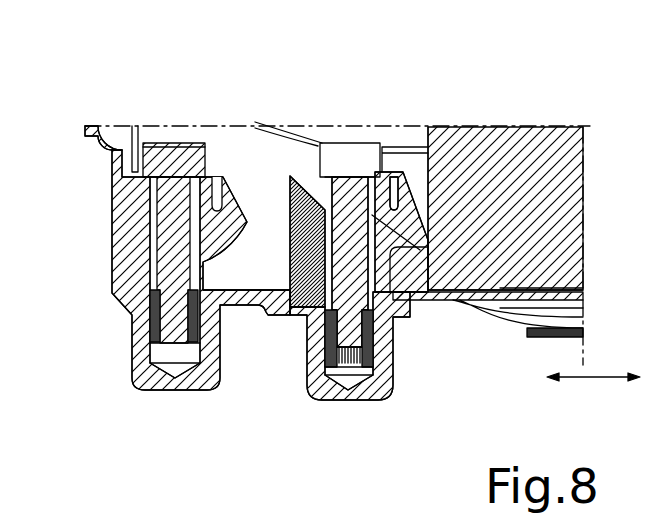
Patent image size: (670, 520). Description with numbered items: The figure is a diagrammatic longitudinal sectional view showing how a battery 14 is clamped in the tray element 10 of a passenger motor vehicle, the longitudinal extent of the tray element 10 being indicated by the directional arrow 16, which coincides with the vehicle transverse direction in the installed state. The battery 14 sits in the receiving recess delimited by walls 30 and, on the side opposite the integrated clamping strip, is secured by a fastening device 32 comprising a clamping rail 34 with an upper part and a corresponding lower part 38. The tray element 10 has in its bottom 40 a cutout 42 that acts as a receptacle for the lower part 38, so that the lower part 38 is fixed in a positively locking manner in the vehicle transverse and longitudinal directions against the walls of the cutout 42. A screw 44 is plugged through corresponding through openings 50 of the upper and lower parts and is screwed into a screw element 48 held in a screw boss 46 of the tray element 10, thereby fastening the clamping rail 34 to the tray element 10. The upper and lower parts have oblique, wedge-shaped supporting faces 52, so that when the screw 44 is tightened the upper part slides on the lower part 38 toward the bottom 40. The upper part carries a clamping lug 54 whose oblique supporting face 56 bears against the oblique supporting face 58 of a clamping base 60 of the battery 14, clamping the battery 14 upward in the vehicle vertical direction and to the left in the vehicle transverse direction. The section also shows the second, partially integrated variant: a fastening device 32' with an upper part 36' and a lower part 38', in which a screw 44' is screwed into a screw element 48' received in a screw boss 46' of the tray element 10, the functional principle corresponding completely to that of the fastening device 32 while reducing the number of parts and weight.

The tray element 10 is at (410, 316).
The battery 14 is at (484, 128).
The directional arrow 16 is at (585, 382).
The walls 30 is at (392, 165).
The fastening device 32 is at (374, 115).
The fastening device 32' is at (121, 95).
The clamping rail 34 is at (430, 188).
The upper part 36' is at (225, 119).
The lower part 38 is at (253, 275).
The lower part 38' is at (152, 270).
The bottom 40 is at (500, 288).
The cutout 42 is at (393, 313).
The screw 44 is at (344, 181).
The screw 44' is at (176, 204).
The screw boss 46 is at (391, 395).
The screw boss 46' is at (222, 382).
The screw element 48 is at (326, 389).
The screw element 48' is at (106, 345).
The through openings 50 is at (378, 180).
The supporting faces 52 is at (296, 172).
The clamping lug 54 is at (430, 207).
The supporting face 56 is at (430, 247).
The supporting face 58 is at (350, 160).
The clamping base 60 is at (420, 300).